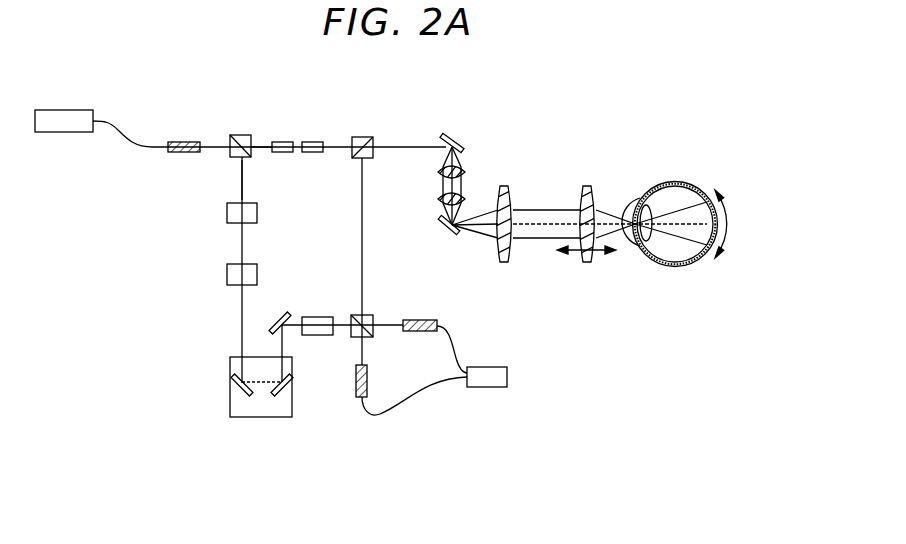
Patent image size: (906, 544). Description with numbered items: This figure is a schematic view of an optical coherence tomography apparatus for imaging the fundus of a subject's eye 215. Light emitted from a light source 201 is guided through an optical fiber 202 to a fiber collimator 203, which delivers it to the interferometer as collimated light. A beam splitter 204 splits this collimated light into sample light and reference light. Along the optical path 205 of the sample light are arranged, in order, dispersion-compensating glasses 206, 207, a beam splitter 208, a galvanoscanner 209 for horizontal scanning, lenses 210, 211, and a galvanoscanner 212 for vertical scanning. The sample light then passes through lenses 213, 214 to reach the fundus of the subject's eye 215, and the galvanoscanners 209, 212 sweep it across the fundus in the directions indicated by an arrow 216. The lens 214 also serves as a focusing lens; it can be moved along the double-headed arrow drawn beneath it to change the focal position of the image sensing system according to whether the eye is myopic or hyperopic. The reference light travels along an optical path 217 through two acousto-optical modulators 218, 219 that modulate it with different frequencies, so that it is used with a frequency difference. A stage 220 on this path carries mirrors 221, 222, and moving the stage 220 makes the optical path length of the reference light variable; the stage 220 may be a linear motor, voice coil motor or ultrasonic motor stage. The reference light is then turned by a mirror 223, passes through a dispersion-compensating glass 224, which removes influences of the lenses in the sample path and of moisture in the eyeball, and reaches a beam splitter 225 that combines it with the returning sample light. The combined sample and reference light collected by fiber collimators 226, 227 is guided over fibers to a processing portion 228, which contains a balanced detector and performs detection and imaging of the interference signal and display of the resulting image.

The light source 201 is at (62, 110).
The optical fiber 202 is at (141, 145).
The fiber collimator 203 is at (184, 142).
The beam splitter 204 is at (237, 135).
The optical path 205 is at (258, 150).
The dispersion-compensating glass 206 is at (283, 142).
The dispersion-compensating glass 207 is at (312, 153).
The beam splitter 208 is at (362, 137).
The galvanoscanner 209 is at (453, 134).
The lens 210 is at (467, 170).
The lens 211 is at (467, 195).
The galvanoscanner 212 is at (440, 223).
The lens 213 is at (504, 262).
The lens 214 is at (588, 186).
The subject's eye 215 is at (675, 181).
The arrow 216 is at (727, 206).
The optical path 217 is at (240, 177).
The acousto-optical modulator 218 is at (227, 213).
The acousto-optical modulator 219 is at (227, 275).
The stage 220 is at (230, 365).
The mirror 221 is at (244, 395).
The mirror 222 is at (283, 395).
The mirror 223 is at (281, 313).
The dispersion-compensating glass 224 is at (318, 335).
The beam splitter 225 is at (355, 314).
The fiber collimator 226 is at (367, 380).
The fiber collimator 227 is at (417, 320).
The processing portion 228 is at (487, 387).